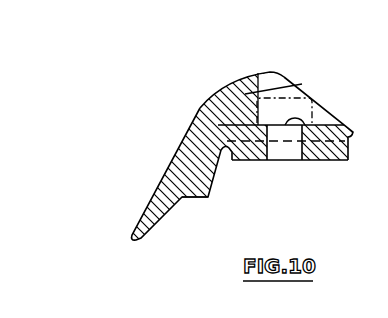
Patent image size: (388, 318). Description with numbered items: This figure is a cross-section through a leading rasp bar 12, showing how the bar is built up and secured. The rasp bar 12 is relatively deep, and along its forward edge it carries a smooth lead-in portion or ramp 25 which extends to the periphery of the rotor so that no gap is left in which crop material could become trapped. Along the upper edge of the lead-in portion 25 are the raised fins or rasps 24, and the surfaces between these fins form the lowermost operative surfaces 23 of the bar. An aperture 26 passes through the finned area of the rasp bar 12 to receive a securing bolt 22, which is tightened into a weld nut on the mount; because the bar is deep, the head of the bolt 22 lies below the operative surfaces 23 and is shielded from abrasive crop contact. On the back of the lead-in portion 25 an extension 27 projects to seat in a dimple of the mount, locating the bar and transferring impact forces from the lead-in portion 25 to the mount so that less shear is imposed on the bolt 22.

The leading rasp bar 12 is at (322, 164).
The bolt 22 is at (318, 104).
The lowermost operative surface 23 is at (240, 89).
The fin 24 is at (258, 73).
The lead-in portion 25 is at (175, 165).
The aperture 26 is at (270, 150).
The extension 27 is at (209, 198).